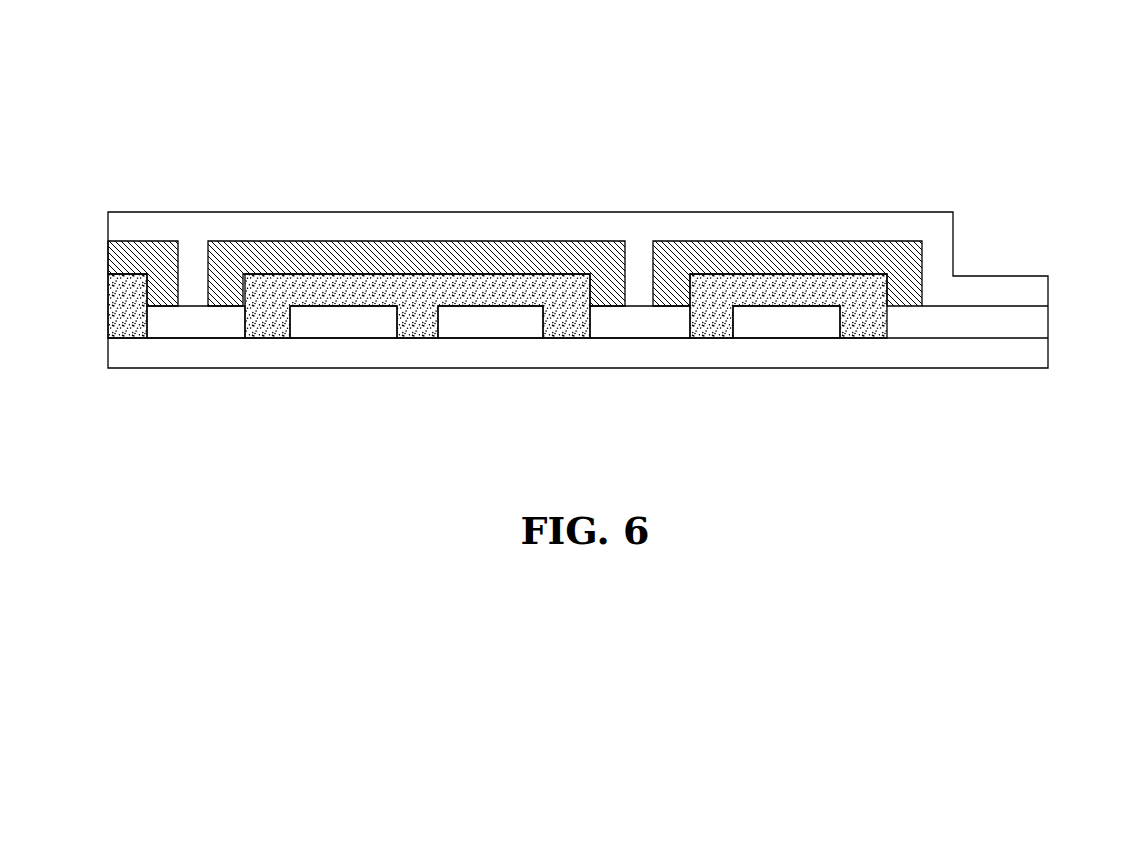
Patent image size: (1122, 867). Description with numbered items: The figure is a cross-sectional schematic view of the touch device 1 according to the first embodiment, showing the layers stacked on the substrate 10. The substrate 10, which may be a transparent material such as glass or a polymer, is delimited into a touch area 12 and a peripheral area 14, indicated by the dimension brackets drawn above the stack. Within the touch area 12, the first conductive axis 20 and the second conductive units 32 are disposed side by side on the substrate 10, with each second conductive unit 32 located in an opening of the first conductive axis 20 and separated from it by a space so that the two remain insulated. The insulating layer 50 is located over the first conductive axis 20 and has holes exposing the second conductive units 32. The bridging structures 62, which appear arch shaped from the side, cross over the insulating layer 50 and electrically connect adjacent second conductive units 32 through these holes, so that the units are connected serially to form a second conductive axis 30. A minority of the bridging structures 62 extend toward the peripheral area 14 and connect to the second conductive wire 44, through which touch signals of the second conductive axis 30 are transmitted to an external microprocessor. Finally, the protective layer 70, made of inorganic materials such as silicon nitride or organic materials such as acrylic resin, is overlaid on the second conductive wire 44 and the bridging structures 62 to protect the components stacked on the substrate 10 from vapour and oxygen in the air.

The touch device 1 is at (1048, 160).
The substrate 10 is at (578, 351).
The touch area 12 is at (889, 53).
The peripheral area 14 is at (1047, 35).
The first conductive axis 20 is at (565, 322).
The second conductive axis 30 is at (630, 185).
The second conductive unit 32 is at (651, 199).
The second conductive wire 44 is at (985, 320).
The insulating layer 50 is at (108, 312).
The bridging structure 62 is at (390, 245).
The protective layer 70 is at (578, 289).